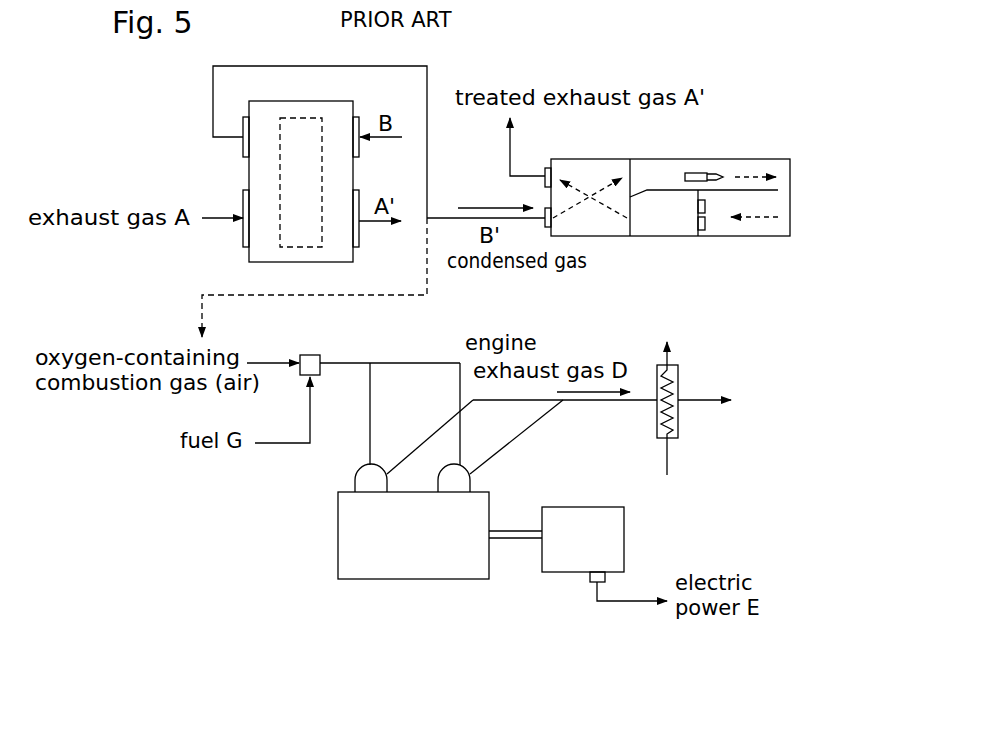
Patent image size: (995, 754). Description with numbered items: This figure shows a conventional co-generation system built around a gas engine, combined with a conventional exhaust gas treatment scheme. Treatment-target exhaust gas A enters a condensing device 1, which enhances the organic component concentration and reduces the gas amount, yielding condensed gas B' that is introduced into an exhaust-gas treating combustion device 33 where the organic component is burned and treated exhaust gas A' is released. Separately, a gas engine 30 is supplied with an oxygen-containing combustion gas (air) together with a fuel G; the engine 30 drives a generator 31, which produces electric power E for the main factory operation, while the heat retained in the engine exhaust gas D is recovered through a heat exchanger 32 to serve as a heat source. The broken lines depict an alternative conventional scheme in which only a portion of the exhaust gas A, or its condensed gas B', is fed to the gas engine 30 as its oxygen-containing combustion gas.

The condensing device 1 is at (250, 173).
The gas engine 30 is at (350, 535).
The generator 31 is at (560, 505).
The heat exchanger 32 is at (678, 388).
The exhaust-gas treating combustion device 33 is at (648, 159).